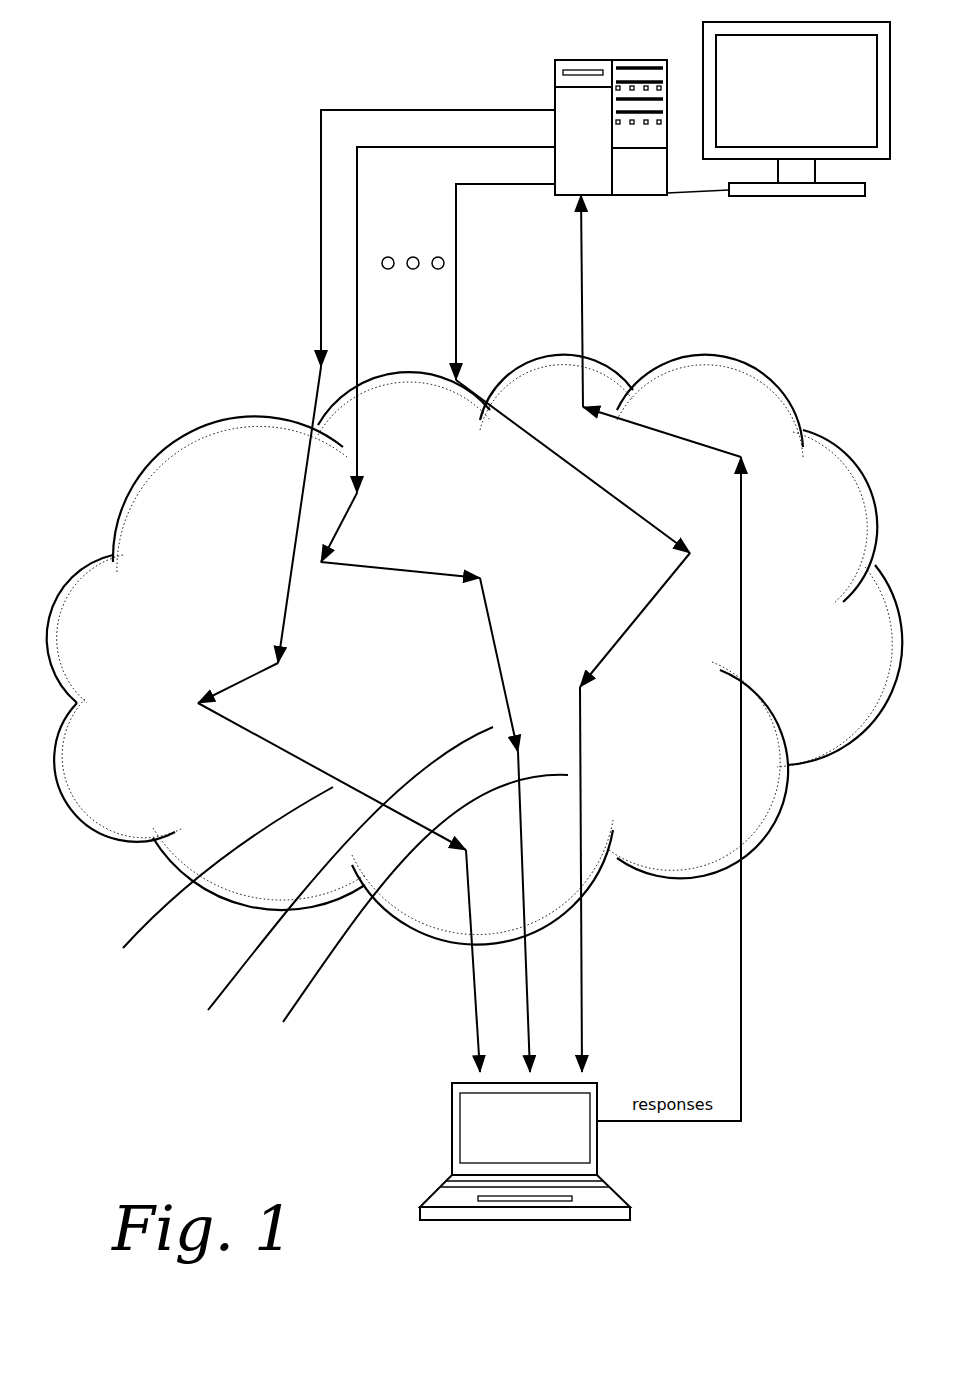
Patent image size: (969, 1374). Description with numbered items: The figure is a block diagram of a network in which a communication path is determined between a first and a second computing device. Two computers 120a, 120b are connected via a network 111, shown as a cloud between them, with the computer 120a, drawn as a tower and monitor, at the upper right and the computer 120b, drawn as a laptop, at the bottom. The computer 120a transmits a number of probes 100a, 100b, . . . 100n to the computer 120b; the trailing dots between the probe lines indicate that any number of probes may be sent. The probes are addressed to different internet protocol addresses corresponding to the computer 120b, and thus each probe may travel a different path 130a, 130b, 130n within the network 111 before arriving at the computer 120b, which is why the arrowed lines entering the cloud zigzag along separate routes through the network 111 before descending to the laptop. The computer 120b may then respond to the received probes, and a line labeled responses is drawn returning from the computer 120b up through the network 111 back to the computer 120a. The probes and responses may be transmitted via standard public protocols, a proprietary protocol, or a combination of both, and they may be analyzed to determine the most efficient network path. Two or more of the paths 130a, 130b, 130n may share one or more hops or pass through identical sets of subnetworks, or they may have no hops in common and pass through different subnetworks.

The probe 100a is at (376, 577).
The probe 100b is at (438, 596).
The probe 100n is at (568, 614).
The network 111 is at (475, 650).
The computer 120a is at (722, 154).
The computer 120b is at (525, 1184).
The path 130a is at (198, 889).
The path 130b is at (327, 884).
The path 130n is at (402, 926).